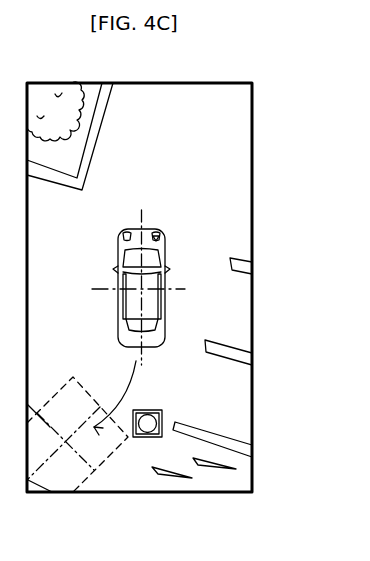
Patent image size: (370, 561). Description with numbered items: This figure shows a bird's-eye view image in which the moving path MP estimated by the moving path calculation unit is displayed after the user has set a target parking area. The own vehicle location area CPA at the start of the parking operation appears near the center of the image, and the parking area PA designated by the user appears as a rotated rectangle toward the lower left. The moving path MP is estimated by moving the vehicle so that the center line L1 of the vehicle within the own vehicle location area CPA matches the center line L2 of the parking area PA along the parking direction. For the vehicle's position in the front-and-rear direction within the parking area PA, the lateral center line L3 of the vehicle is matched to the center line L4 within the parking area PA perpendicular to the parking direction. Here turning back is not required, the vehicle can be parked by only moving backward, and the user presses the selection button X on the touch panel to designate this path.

The own vehicle location area CPA is at (157, 237).
The center line of the vehicle L1 is at (91, 287).
The center line of the parking area L2 is at (80, 512).
The center line of the vehicle along the lateral direction L3 is at (197, 254).
The center line of the vehicle within the parking area L4 is at (47, 386).
The moving path MP is at (212, 398).
The parking area PA is at (129, 439).
The selection button X is at (162, 437).